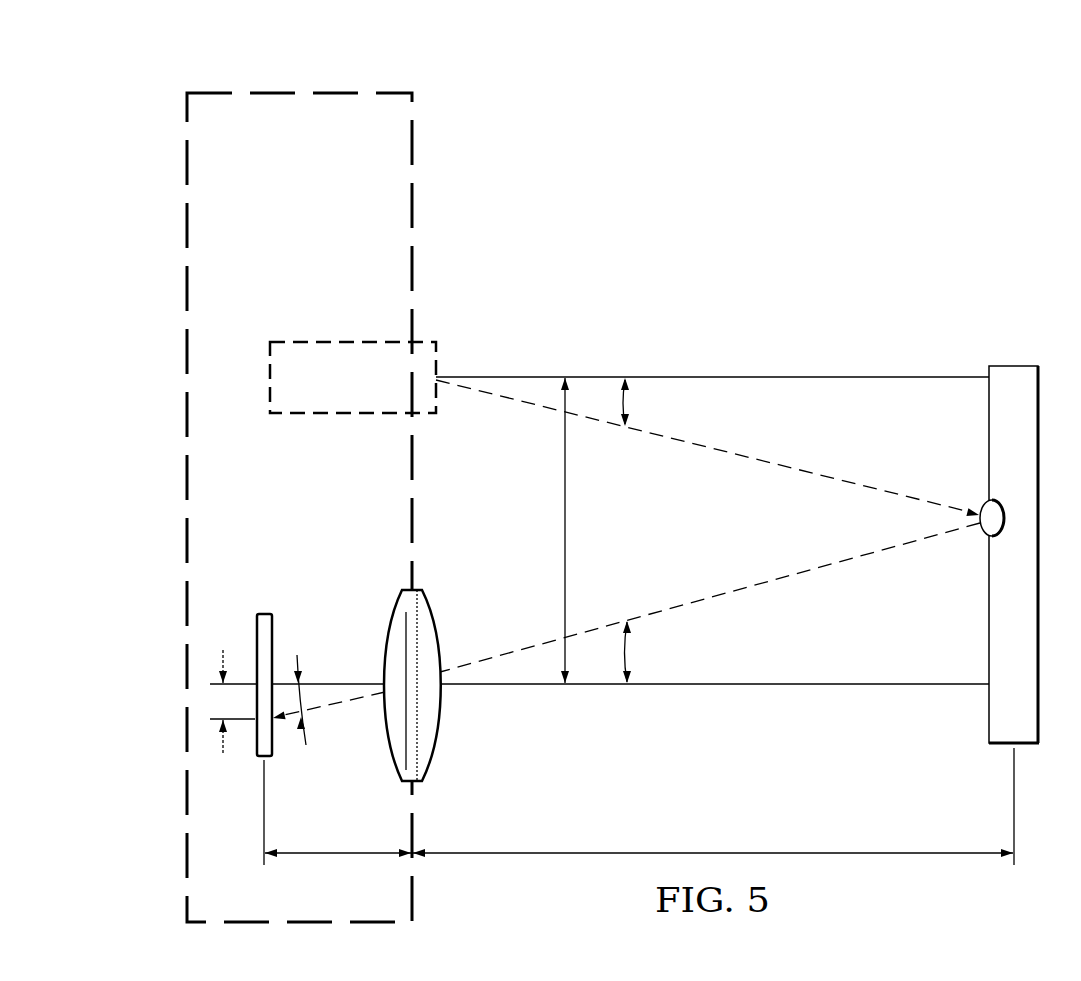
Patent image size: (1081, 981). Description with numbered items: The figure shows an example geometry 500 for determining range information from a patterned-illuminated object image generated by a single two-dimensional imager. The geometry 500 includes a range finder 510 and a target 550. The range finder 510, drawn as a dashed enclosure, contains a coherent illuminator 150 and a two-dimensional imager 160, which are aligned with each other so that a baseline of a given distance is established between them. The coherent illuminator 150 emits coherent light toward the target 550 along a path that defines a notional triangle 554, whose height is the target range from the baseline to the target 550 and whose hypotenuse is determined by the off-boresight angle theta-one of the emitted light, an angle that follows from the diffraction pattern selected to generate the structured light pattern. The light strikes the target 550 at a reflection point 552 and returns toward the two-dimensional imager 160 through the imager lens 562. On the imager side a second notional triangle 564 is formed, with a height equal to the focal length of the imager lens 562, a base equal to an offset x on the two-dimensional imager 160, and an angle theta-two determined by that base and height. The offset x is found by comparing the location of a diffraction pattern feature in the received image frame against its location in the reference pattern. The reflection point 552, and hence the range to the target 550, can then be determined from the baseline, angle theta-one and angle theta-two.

The geometry 500 is at (890, 140).
The range finder 510 is at (209, 90).
The coherent illuminator 150 is at (340, 341).
The 2D imager 160 is at (262, 612).
The imager lens 562 is at (441, 703).
The notional triangle 564 is at (332, 683).
The notional triangle 554 is at (731, 453).
The reflection point 552 is at (980, 533).
The target 550 is at (1016, 366).